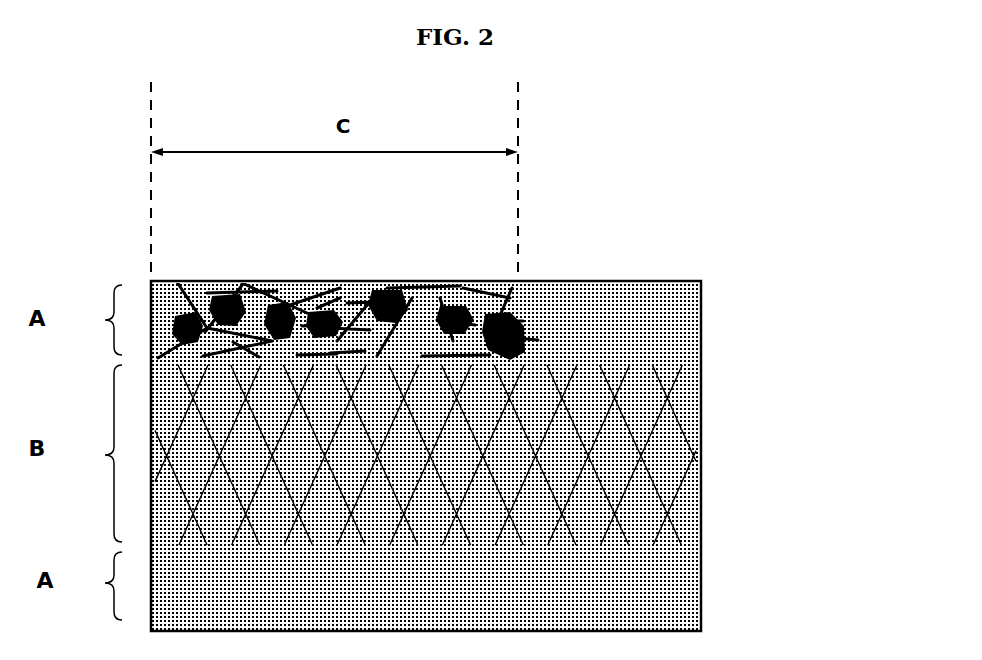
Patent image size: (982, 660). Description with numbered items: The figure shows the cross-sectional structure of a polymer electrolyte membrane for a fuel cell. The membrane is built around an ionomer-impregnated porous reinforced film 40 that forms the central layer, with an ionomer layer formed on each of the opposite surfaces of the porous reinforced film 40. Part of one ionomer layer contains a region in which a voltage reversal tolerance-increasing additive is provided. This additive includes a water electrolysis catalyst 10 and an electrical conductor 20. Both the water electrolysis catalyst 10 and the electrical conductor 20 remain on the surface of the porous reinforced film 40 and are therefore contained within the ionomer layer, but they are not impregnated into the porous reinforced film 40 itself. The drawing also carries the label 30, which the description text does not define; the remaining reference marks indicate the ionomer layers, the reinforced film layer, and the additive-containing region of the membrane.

The water electrolysis catalyst 10 is at (527, 345).
The electrical conductor 20 is at (488, 312).
The matrix 30 is at (622, 450).
The porous reinforced film 40 is at (680, 475).